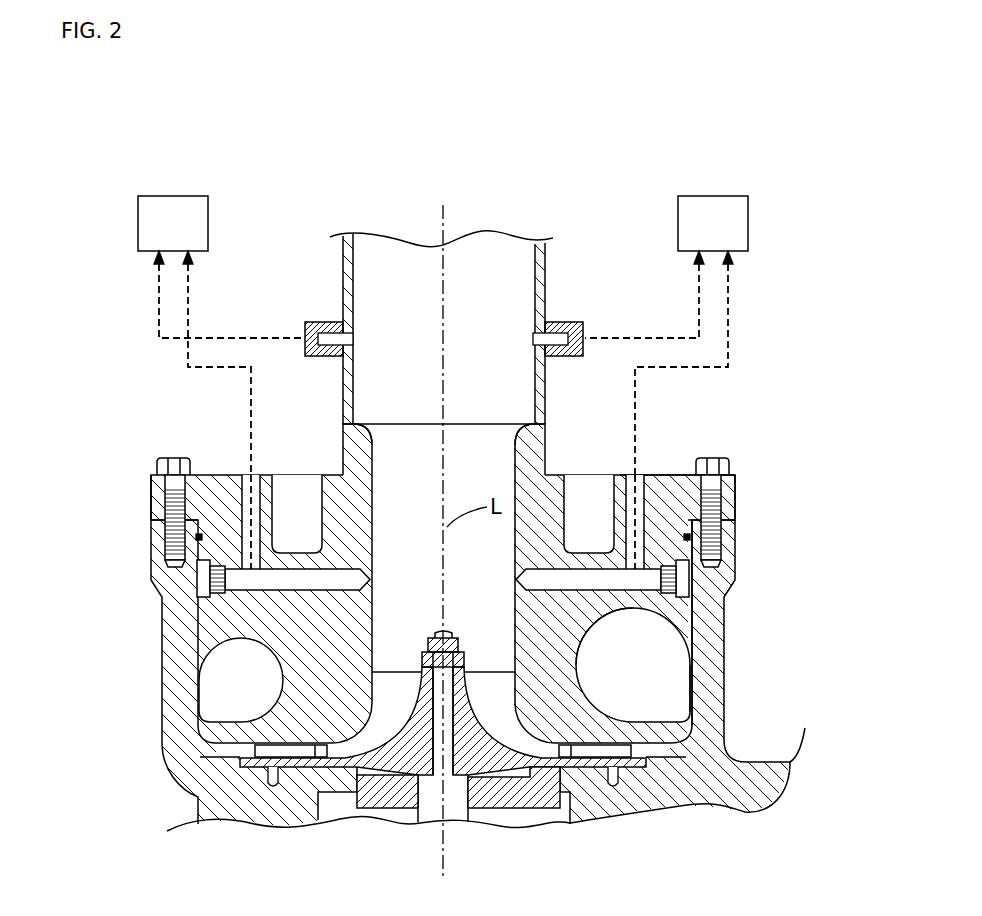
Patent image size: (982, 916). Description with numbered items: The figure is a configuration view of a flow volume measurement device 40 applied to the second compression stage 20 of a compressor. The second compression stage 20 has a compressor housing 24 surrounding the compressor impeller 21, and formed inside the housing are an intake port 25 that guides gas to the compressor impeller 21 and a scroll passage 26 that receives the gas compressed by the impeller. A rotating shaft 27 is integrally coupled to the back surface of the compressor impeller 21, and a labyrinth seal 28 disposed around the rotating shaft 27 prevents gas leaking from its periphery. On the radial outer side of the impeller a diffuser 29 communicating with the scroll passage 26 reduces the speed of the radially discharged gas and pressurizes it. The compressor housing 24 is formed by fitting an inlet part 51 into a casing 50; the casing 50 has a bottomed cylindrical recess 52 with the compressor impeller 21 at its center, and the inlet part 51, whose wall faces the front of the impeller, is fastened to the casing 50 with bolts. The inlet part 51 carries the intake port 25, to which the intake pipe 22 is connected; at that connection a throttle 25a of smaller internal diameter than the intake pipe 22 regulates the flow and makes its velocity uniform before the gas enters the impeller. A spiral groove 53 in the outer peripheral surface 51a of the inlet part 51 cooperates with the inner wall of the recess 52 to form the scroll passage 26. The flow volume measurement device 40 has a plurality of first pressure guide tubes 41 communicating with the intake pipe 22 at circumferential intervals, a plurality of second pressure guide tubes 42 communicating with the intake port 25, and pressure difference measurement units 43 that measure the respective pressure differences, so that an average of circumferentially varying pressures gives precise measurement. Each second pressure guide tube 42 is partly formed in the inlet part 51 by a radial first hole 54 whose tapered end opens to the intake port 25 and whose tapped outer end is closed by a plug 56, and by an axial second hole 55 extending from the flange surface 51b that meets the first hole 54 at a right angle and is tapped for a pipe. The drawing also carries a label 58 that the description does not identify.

The second compression stage 20 is at (130, 484).
The compressor impeller 21 is at (406, 668).
The intake pipe 22 is at (340, 278).
The compressor housing 24 is at (107, 597).
The intake port 25 is at (374, 522).
The throttle 25a is at (378, 430).
The scroll passage 26 is at (636, 648).
The rotating shaft 27 is at (416, 823).
The labyrinth seal 28 is at (505, 825).
The diffuser 29 is at (238, 752).
The flow volume measurement device 40 is at (129, 182).
The first pressure guide tubes 41 is at (243, 333).
The second pressure guide tubes 42 is at (246, 397).
The pressure difference measurement units 43 is at (172, 196).
The casing 50 is at (178, 659).
The inlet part 51 is at (215, 623).
The outer peripheral surface 51a is at (692, 622).
The flange surface 51b is at (677, 473).
The recess 52 is at (690, 698).
The spiral groove 53 is at (585, 696).
The first hole 54 is at (338, 578).
The second hole 55 is at (256, 517).
The plug 56 is at (200, 580).
The recess 58 is at (293, 533).